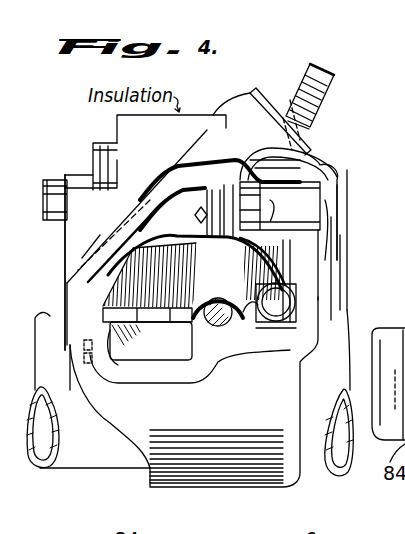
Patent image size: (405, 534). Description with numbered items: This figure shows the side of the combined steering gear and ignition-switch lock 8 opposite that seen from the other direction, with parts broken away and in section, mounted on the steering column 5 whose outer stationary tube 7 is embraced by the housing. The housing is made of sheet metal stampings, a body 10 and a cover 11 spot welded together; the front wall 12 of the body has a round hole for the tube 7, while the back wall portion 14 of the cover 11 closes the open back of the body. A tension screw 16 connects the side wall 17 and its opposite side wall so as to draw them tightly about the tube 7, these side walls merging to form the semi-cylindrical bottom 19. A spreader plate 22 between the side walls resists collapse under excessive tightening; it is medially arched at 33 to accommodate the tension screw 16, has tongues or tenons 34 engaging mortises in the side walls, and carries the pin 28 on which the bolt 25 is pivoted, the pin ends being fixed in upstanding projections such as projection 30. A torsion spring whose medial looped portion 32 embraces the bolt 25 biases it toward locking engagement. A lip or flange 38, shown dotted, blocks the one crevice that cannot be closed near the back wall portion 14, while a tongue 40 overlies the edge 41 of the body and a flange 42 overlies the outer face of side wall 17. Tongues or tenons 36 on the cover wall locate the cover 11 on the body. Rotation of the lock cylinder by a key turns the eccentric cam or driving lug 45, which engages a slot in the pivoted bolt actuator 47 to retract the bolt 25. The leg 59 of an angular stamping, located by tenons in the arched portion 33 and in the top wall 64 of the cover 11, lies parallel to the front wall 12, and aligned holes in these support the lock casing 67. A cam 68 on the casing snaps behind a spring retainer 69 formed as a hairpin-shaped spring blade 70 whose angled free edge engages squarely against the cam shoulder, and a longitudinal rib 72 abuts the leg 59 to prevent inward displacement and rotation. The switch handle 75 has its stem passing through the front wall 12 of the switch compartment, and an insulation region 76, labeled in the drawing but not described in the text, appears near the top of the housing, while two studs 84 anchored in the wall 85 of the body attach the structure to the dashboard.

The steering column 5 is at (348, 485).
The outer stationary tube 7 is at (64, 468).
The combined steering gear and ignition-switch lock 8 is at (278, 91).
The body 10 is at (318, 303).
The cover 11 is at (158, 173).
The front wall 12 is at (334, 240).
The back wall portion 14 is at (67, 272).
The tension screw 16 is at (224, 328).
The side wall 17 is at (143, 415).
The semi-cylindrical bottom 19 is at (150, 484).
The spreader plate 22 is at (198, 325).
The bolt 25 is at (120, 364).
The pin 28 is at (276, 312).
The upstanding projection 30 is at (290, 322).
The medial looped portion 32 is at (244, 216).
The medially arched portion 33 is at (245, 322).
The tongues or tenons 34 is at (147, 334).
The tongues or tenons 36 is at (84, 350).
The lip or flange 38 is at (80, 257).
The tongue 40 is at (67, 298).
The edge of the body 41 is at (52, 351).
The flange 42 is at (125, 234).
The eccentric cam or driving lug 45 is at (212, 190).
The bolt actuator 47 is at (200, 222).
The leg of the angular stamping 59 is at (235, 185).
The top wall 64 is at (304, 148).
The lock casing 67 is at (332, 188).
The cam 68 is at (271, 235).
The spring retainer 69 is at (326, 212).
The hairpin-shaped spring blade 70 is at (322, 256).
The longitudinal rib 72 is at (290, 165).
The switch handle 75 is at (340, 278).
The insulation box 76 is at (116, 125).
The studs 84 is at (318, 70).
The wall of the body 85 is at (262, 90).